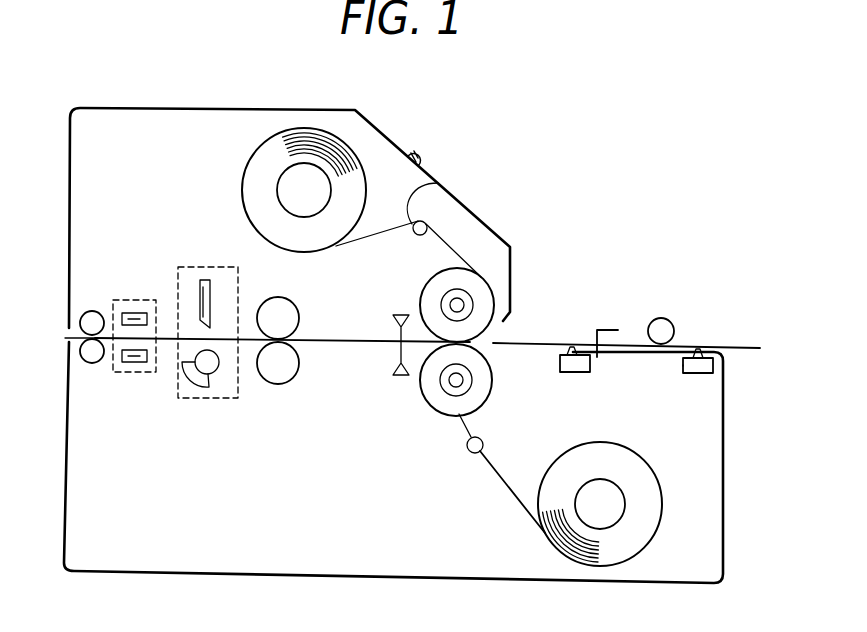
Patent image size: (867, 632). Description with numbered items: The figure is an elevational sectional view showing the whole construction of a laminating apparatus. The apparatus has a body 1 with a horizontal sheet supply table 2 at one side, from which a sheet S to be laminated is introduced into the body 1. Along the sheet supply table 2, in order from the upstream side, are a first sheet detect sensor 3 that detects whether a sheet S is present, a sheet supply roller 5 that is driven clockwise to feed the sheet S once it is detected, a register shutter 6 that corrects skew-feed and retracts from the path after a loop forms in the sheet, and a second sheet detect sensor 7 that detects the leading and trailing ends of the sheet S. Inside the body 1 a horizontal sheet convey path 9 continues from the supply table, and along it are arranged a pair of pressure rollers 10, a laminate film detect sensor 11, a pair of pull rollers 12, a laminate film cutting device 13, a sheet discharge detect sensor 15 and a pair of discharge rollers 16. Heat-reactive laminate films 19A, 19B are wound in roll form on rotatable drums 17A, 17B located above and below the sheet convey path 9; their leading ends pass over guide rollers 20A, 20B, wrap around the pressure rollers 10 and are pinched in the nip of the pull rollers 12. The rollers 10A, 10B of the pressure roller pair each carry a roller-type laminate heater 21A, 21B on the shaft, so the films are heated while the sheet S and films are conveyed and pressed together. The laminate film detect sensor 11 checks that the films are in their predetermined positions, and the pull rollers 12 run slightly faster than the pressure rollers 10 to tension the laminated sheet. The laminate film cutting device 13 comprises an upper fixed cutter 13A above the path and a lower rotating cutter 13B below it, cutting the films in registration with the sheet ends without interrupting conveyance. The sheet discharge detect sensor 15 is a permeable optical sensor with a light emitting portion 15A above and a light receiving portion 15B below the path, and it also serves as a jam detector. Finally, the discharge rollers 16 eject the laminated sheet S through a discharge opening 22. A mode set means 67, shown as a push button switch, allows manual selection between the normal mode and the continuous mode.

The body 1 is at (393, 581).
The sheet supply table 2 is at (655, 354).
The first sheet detect sensor 3 is at (702, 370).
The sheet supply roller 5 is at (663, 322).
The register shutter 6 is at (605, 330).
The second sheet detect sensor 7 is at (562, 360).
The sheet convey path 9 is at (334, 340).
The pair of pressure rollers 10 is at (472, 338).
The upper pressure roller 10A is at (501, 273).
The lower pressure roller 10B is at (471, 408).
The laminate film detect sensor 11 is at (397, 367).
The pair of pull rollers 12 is at (278, 368).
The laminate film cutting device 13 is at (200, 330).
The upper fixed cutter 13A is at (200, 283).
The lower rotating cutter 13B is at (202, 380).
The sheet discharge detect sensor 15 is at (91, 334).
The light emitting portion 15A is at (135, 312).
The light receiving portion 15B is at (143, 364).
The pair of discharge rollers 16 is at (90, 316).
The rotatable drum 17A is at (312, 178).
The rotatable drum 17B is at (608, 505).
The laminate film 19A is at (438, 183).
The laminate film 19B is at (492, 480).
The guide roller 20A is at (430, 233).
The guide roller 20B is at (470, 450).
The laminate heater 21A is at (473, 305).
The laminate heater 21B is at (465, 380).
The discharge opening 22 is at (62, 332).
The mode set means 67 is at (417, 149).
The sheet S is at (735, 346).